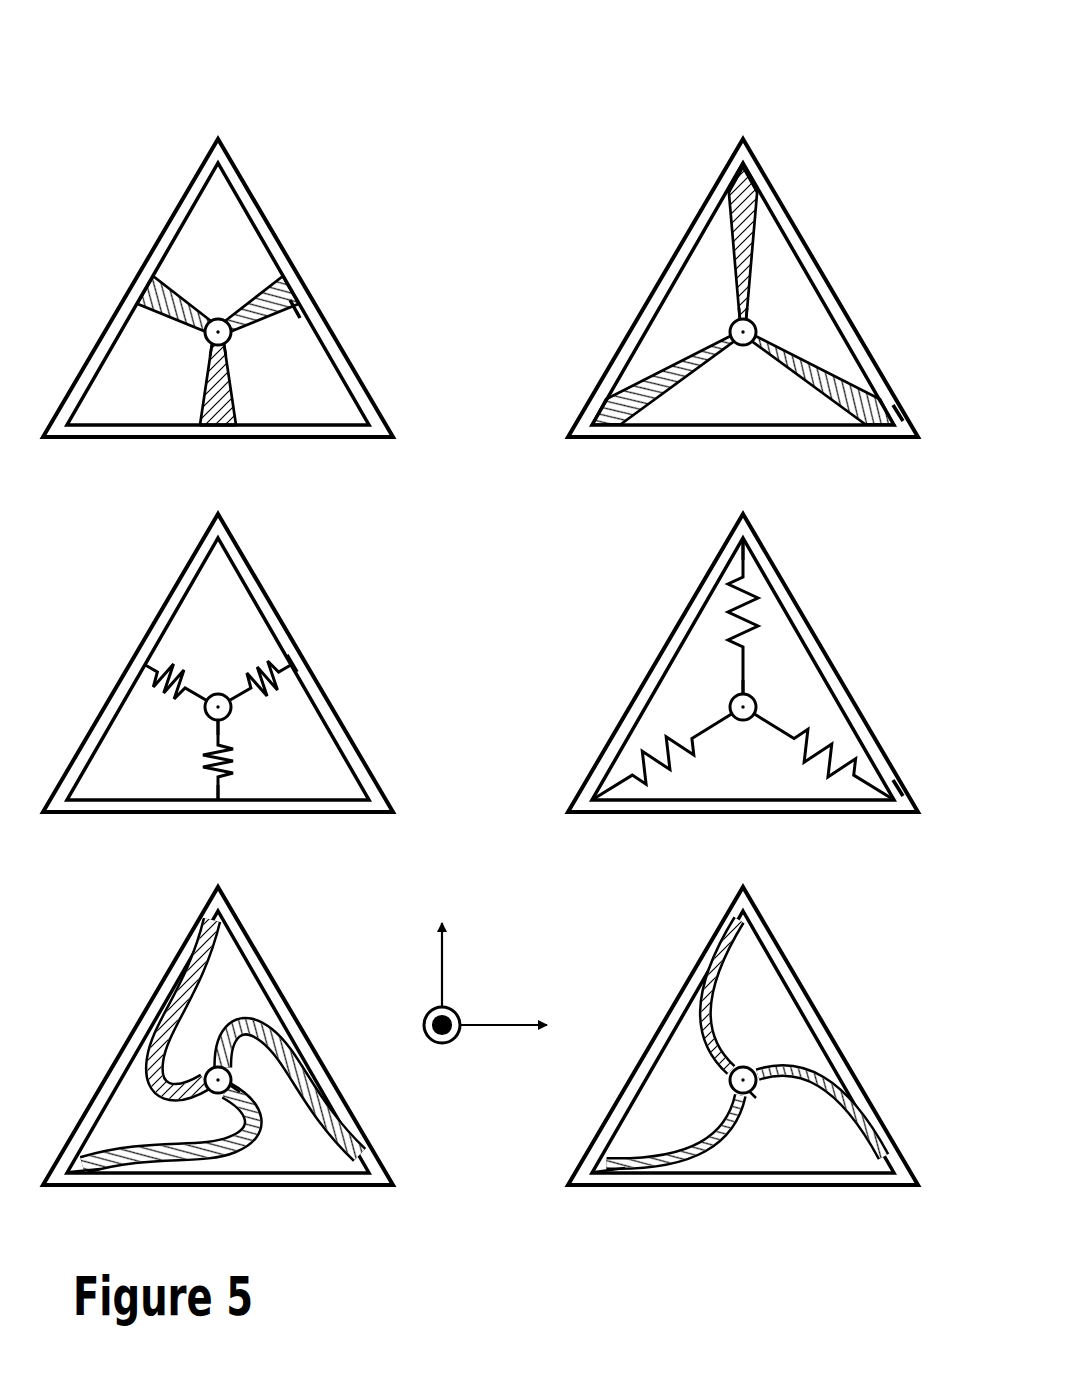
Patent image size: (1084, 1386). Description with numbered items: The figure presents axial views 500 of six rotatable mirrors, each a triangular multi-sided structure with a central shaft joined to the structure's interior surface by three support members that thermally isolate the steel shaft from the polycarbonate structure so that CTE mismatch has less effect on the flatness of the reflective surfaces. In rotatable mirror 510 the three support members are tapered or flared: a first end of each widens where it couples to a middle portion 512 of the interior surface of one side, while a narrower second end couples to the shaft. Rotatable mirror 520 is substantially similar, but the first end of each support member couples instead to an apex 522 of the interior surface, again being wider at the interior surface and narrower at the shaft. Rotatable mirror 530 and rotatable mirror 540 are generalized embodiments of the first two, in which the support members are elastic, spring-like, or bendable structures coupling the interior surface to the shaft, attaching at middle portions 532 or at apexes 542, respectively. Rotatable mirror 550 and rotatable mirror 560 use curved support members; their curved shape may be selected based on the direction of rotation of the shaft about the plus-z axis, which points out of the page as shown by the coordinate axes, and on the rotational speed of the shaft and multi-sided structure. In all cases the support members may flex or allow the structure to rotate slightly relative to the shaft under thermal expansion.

The axial views 500 is at (877, 83).
The rotatable mirror 510 is at (323, 232).
The middle portion 512 is at (295, 307).
The rotatable mirror 520 is at (857, 287).
The apex 522 is at (902, 417).
The rotatable mirror 530 is at (350, 672).
The middle portion 532 is at (292, 660).
The rotatable mirror 540 is at (840, 653).
The apex 542 is at (902, 792).
The rotatable mirror 550 is at (332, 1038).
The rotatable mirror 560 is at (840, 1026).